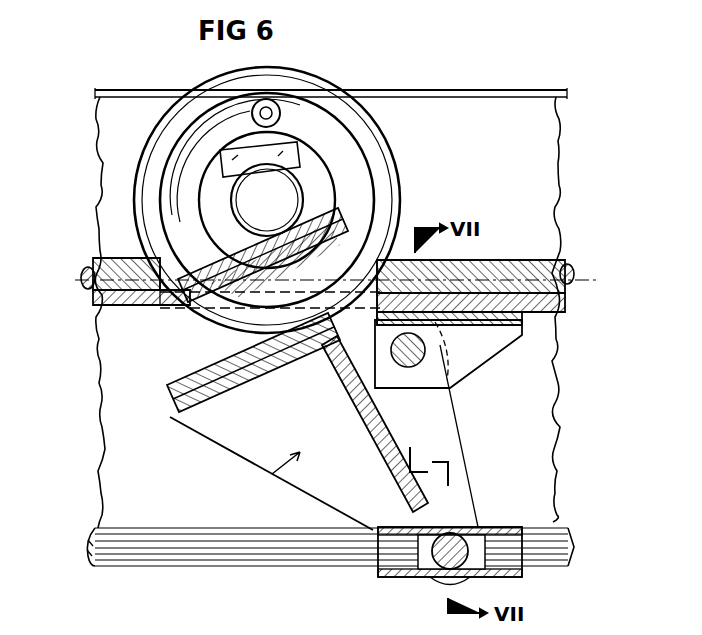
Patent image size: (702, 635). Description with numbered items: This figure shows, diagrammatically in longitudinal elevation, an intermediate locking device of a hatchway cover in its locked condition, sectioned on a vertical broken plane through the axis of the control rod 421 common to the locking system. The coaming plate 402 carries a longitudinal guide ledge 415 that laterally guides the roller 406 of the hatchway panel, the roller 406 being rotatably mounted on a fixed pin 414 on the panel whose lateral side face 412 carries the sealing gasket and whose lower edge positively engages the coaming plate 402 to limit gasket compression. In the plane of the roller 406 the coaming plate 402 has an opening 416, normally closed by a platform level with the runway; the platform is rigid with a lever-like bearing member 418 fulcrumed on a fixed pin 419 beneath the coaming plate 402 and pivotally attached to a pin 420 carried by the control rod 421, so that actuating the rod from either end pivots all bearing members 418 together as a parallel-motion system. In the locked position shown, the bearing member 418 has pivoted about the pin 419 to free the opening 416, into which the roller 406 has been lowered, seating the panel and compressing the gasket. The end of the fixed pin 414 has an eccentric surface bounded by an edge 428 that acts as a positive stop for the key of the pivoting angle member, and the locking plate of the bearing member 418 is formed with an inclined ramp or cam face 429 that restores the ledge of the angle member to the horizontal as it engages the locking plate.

The coaming plate 402 is at (513, 303).
The roller 406 is at (312, 70).
The side face of hatchway panel 412 is at (470, 130).
The fixed pin 414 is at (253, 194).
The lateral guide ledge 415 is at (445, 262).
The opening 416 is at (165, 302).
The bearing member 418 is at (309, 433).
The fixed pin 419 is at (425, 352).
The pin 420 is at (500, 527).
The control rod 421 is at (358, 543).
The edge 428 is at (230, 170).
The inclined ramp or cam face 429 is at (330, 226).